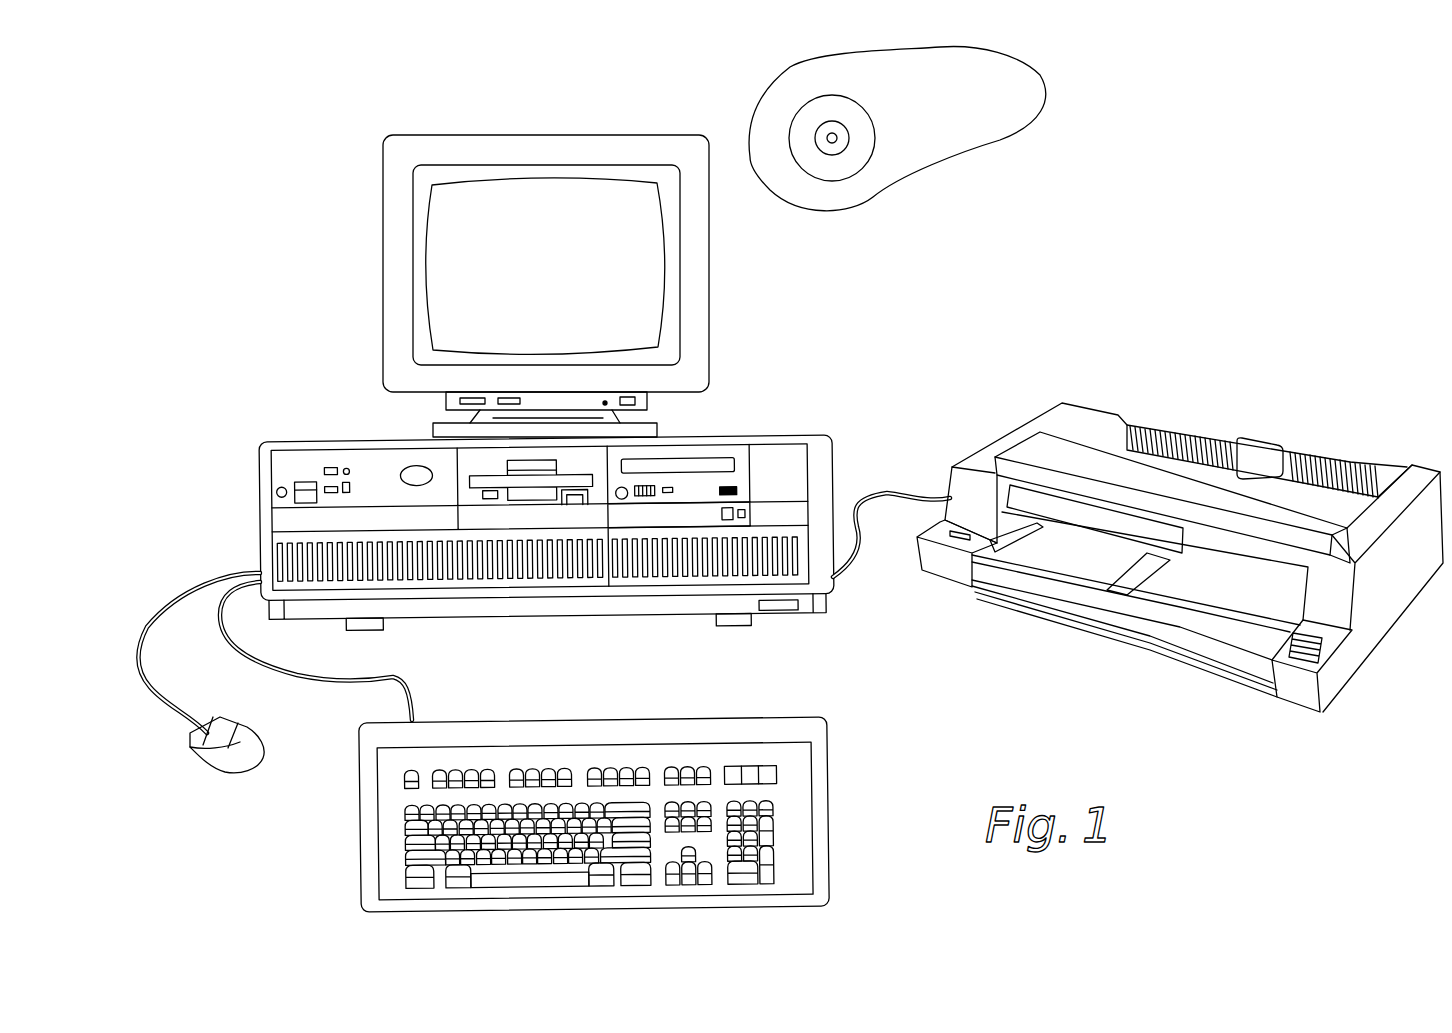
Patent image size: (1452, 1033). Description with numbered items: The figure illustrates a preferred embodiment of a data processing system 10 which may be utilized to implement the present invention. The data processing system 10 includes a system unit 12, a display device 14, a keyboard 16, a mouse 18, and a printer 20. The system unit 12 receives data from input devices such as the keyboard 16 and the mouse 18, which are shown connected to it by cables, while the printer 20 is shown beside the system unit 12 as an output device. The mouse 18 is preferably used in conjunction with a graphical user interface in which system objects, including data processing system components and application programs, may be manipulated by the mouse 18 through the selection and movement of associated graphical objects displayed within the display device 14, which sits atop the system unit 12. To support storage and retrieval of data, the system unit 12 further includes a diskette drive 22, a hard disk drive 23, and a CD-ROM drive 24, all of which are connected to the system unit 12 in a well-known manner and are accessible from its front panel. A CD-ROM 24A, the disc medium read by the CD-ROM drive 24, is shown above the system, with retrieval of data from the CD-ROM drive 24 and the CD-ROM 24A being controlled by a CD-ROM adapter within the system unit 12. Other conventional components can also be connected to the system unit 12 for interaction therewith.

The data processing system 10 is at (933, 261).
The system unit 12 is at (815, 412).
The display device 14 is at (730, 315).
The keyboard 16 is at (680, 700).
The mouse 18 is at (218, 757).
The printer 20 is at (972, 426).
The diskette drive 22 is at (530, 500).
The hard disk drive 23 is at (685, 517).
The CD-ROM drive 24 is at (700, 464).
The CD-ROM 24A is at (860, 135).